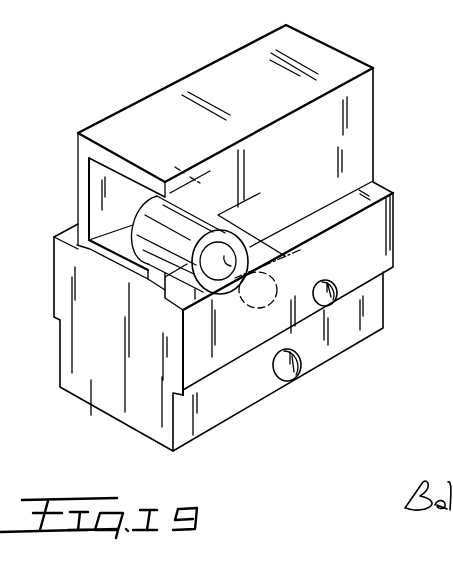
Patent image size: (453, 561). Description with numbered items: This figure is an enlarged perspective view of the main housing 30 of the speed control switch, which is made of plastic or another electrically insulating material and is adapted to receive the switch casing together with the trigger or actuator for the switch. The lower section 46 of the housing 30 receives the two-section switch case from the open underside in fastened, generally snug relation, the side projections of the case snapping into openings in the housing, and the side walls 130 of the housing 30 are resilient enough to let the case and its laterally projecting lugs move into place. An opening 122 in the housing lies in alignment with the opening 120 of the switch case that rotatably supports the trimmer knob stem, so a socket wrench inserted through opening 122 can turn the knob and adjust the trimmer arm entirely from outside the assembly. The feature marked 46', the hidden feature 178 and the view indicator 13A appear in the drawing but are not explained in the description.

The housing 30 is at (326, 45).
The lower section 46 is at (312, 288).
The mounting hole 46' is at (329, 368).
The opening 122 is at (337, 293).
The side walls 130 is at (222, 405).
The hidden bore 178 is at (300, 252).
The section view indicator 13A is at (175, 165).
The opening 120 is at (198, 38).